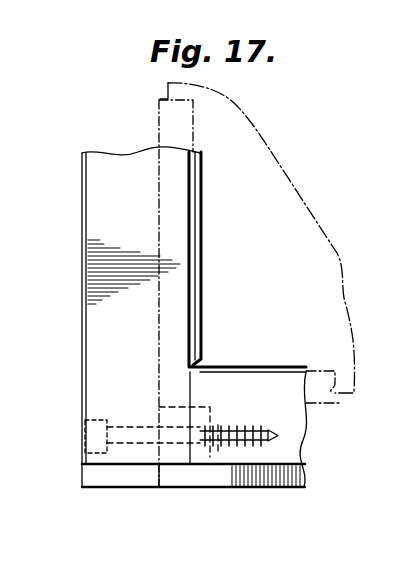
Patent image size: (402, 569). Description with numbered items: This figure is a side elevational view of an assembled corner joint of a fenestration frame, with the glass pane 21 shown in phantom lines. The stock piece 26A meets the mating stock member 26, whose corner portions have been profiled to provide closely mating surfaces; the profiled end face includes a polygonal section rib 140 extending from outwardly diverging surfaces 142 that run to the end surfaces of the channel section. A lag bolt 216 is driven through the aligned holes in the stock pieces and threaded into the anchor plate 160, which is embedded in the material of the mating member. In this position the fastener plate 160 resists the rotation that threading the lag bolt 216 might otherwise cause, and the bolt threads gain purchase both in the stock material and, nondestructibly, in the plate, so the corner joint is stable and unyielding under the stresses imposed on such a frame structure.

The stock piece 26A is at (110, 175).
The housing outline 21 is at (285, 243).
The base member 26 is at (292, 455).
The polygonal section rib 140 is at (97, 477).
The outwardly diverging surfaces 142 is at (142, 467).
The lag bolt 216 is at (100, 430).
The anchor plate 160 is at (228, 410).